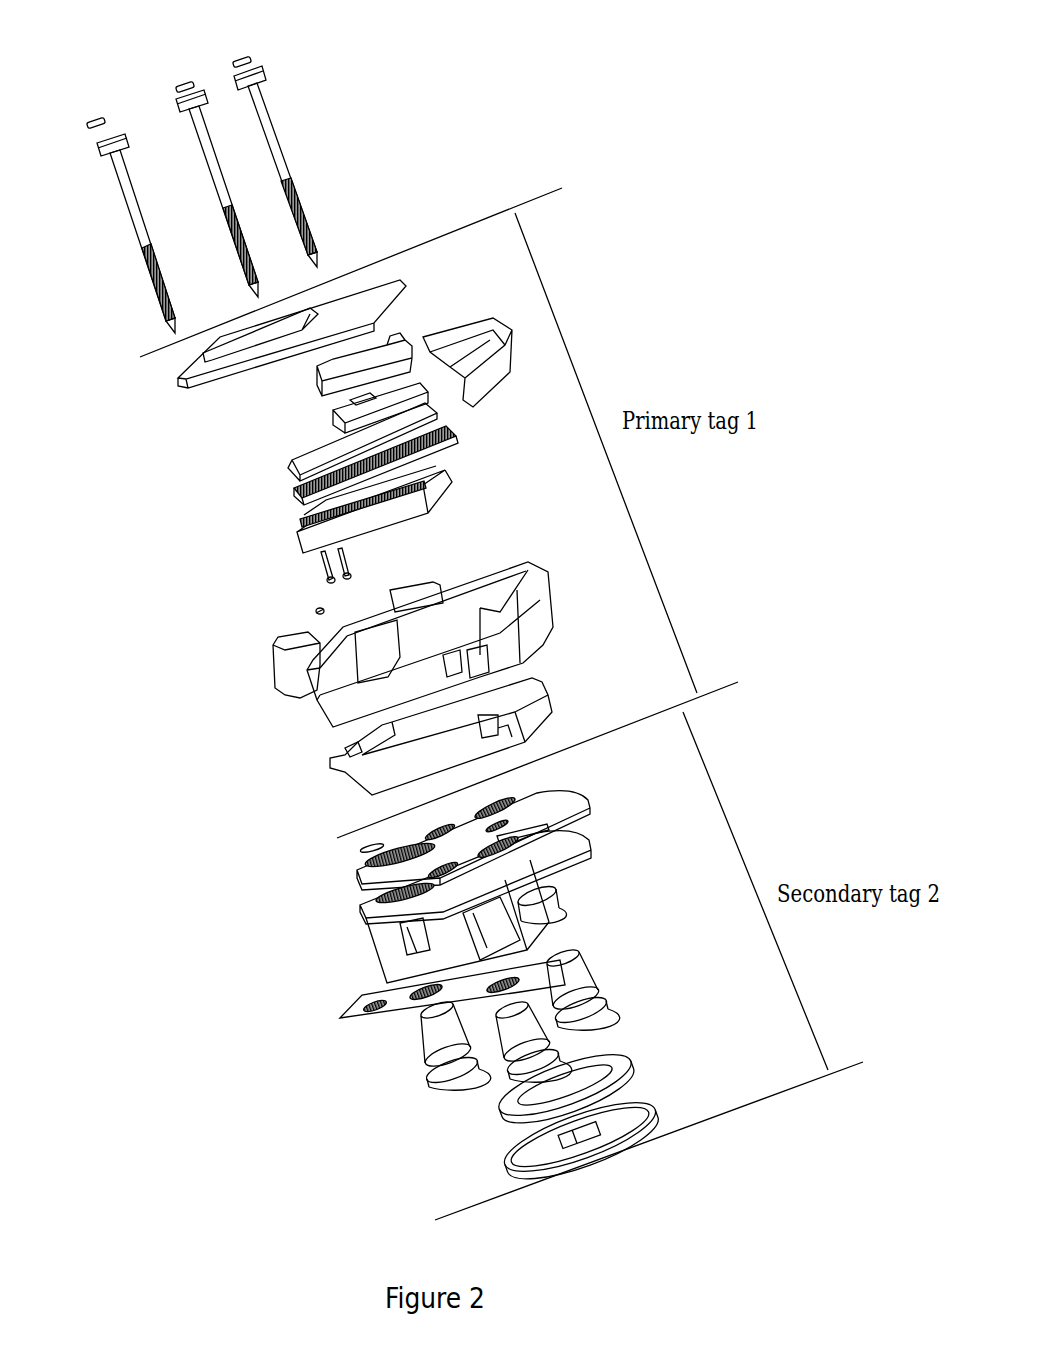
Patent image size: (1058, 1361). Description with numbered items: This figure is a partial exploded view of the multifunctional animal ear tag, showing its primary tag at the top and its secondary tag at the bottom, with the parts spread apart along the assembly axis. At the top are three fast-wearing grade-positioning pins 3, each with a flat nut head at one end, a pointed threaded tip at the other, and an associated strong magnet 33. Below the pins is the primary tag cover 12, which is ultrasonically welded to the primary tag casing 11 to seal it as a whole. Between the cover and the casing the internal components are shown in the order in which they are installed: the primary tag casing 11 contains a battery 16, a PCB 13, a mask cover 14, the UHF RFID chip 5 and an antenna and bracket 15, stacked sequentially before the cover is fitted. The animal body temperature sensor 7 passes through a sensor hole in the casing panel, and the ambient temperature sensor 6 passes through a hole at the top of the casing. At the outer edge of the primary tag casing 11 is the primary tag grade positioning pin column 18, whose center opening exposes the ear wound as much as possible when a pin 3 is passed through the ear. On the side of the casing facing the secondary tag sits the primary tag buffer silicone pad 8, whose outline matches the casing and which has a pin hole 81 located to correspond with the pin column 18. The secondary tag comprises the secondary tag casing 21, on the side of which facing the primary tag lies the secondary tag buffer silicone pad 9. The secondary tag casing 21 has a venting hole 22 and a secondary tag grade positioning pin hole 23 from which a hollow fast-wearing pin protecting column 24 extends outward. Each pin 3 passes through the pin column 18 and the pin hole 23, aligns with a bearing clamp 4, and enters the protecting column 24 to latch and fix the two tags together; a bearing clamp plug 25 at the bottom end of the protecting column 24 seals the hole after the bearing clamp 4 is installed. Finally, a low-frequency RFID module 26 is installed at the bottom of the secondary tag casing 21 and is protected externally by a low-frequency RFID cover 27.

The fast-wearing grade-positioning pin 3 is at (245, 90).
The strong magnet 33 is at (238, 58).
The primary tag cover 12 is at (192, 398).
The UHF RFID chip 5 is at (322, 392).
The antenna and bracket 15 is at (437, 345).
The mask cover 14 is at (440, 422).
The PCB 13 is at (440, 452).
The battery 16 is at (440, 493).
The animal body temperature sensor 7 is at (330, 583).
The ambient temperature sensor 6 is at (318, 612).
The primary tag grade positioning pin column 18 is at (288, 657).
The primary tag casing 11 is at (347, 688).
The pin hole 81 is at (360, 747).
The primary tag buffer silicone pad 8 is at (345, 773).
The secondary tag buffer silicone pad 9 is at (353, 870).
The venting hole 22 is at (577, 830).
The secondary tag grade positioning pin hole 23 is at (583, 883).
The secondary tag casing 21 is at (367, 928).
The fast-wearing pin protecting column 24 is at (400, 955).
The bearing clamp 4 is at (353, 1013).
The bearing clamp plug 25 is at (568, 1002).
The low-frequency RFID module 26 is at (627, 1057).
The low-frequency RFID cover 27 is at (650, 1110).